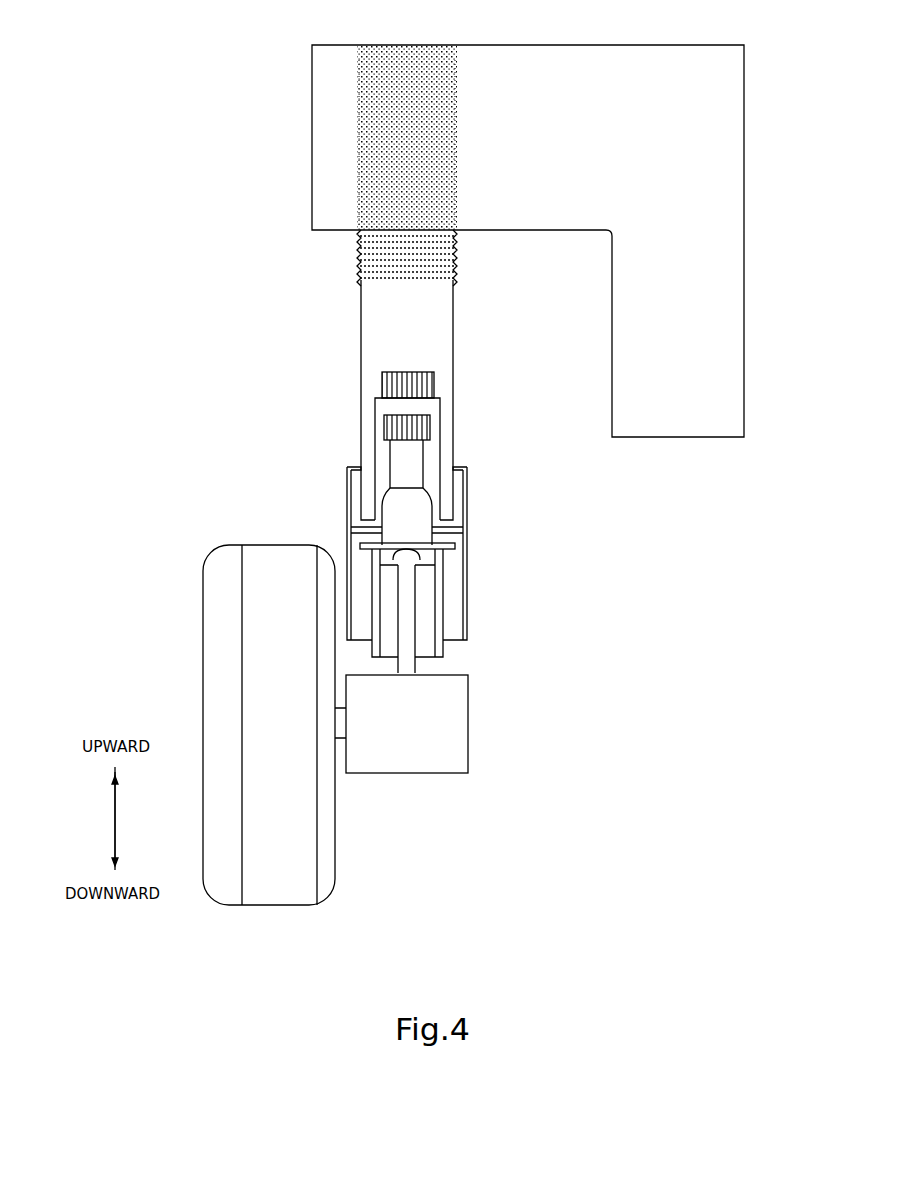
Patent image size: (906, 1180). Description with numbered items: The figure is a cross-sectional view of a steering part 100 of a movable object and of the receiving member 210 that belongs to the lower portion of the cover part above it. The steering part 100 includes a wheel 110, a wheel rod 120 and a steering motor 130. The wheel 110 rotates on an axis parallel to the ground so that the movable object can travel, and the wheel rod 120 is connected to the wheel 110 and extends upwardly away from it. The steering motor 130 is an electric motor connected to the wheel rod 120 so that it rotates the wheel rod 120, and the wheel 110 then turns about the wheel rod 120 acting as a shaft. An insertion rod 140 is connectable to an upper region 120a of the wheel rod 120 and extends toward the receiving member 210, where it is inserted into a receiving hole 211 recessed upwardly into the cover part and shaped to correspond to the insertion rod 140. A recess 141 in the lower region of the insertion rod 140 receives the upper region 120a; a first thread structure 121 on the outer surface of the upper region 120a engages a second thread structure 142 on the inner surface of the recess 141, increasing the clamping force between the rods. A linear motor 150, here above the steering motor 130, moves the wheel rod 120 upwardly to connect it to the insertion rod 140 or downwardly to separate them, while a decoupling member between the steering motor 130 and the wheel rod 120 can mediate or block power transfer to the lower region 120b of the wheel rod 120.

The steering part 100 is at (148, 718).
The wheel 110 is at (272, 560).
The wheel rod 120 is at (543, 486).
The upper region of the wheel rod 120a is at (444, 485).
The lower region of the wheel rod 120b is at (432, 617).
The first thread structure 121 is at (432, 428).
The steering motor 130 is at (432, 588).
The insertion rod 140 is at (383, 320).
The recess 141 is at (430, 386).
The second thread structure 142 is at (430, 386).
The linear motor 150 is at (430, 525).
The receiving member 210 is at (338, 152).
The receiving hole 211 is at (398, 100).